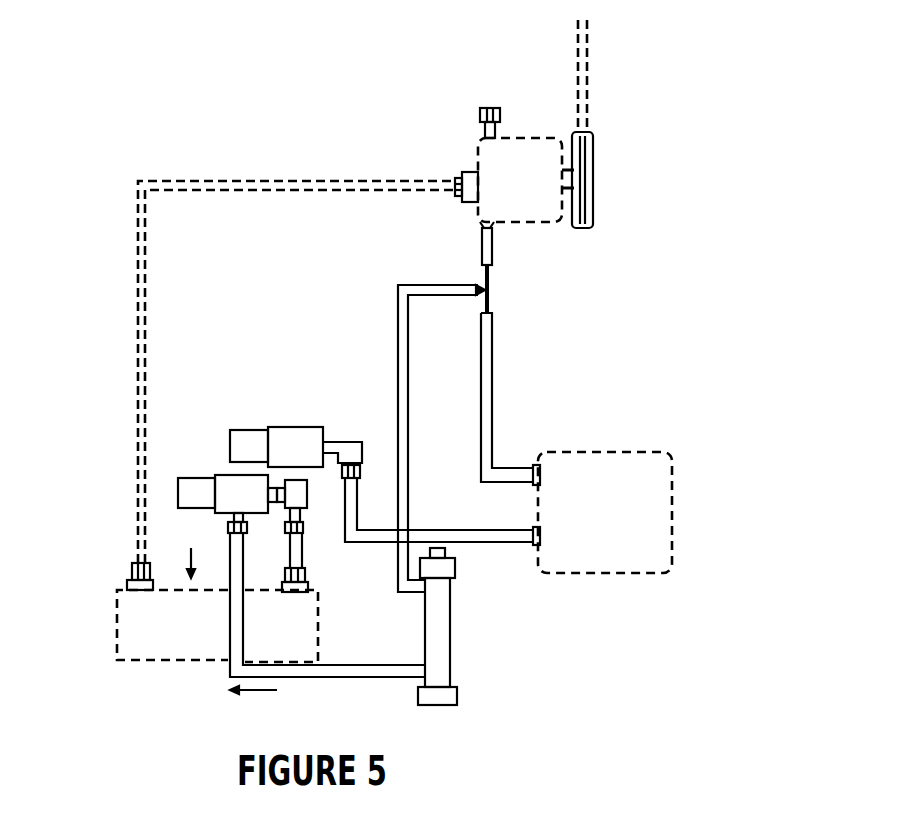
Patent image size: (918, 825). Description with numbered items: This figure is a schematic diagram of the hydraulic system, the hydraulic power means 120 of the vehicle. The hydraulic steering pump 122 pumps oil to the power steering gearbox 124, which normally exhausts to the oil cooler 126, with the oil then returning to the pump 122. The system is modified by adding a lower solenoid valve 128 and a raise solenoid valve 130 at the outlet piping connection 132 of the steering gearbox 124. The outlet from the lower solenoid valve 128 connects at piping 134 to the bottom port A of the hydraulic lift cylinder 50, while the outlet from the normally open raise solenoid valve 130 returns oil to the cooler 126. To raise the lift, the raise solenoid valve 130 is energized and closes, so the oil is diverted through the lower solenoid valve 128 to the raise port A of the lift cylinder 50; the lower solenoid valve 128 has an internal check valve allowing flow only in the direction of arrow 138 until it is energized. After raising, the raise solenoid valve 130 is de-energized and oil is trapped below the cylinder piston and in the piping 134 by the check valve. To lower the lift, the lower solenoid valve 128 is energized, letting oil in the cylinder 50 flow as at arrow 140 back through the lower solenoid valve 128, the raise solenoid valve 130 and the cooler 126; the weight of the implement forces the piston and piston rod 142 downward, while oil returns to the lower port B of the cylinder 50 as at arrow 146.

The hydraulic lift cylinder 50 is at (444, 598).
The hydraulic power means 120 is at (132, 302).
The hydraulic steering pump 122 is at (478, 151).
The power steering gearbox 124 is at (127, 632).
The oil cooler 126 is at (655, 487).
The lower solenoid valve 128 is at (226, 482).
The raise solenoid valve 130 is at (290, 431).
The outlet piping connection 132 is at (302, 588).
The piping 134 is at (349, 676).
The arrow 138 is at (192, 550).
The arrow 140 is at (253, 702).
The piston rod 142 is at (444, 553).
The arrow 146 is at (427, 440).